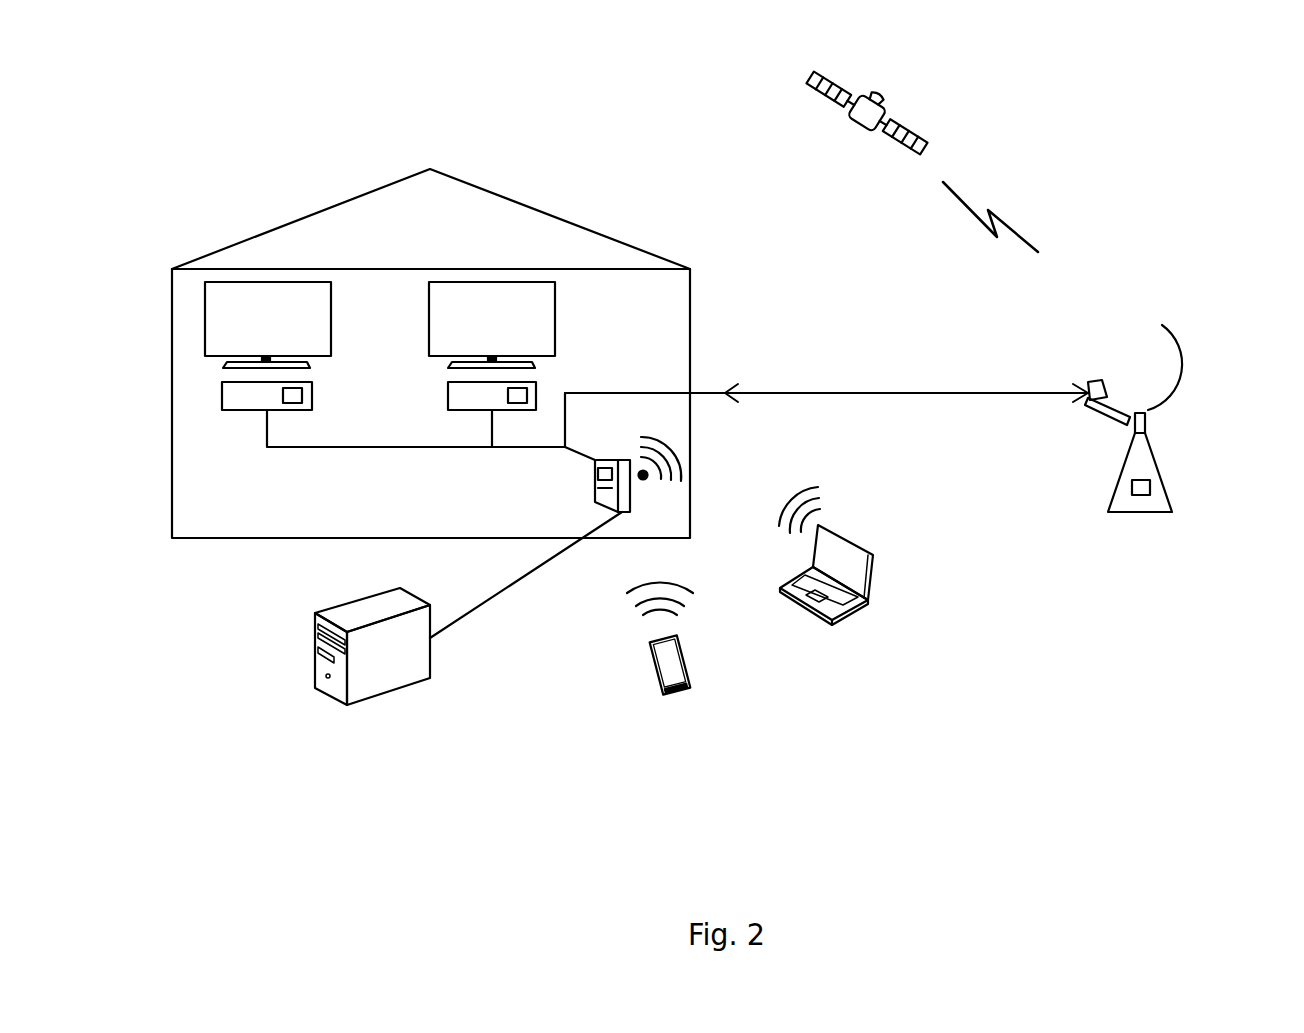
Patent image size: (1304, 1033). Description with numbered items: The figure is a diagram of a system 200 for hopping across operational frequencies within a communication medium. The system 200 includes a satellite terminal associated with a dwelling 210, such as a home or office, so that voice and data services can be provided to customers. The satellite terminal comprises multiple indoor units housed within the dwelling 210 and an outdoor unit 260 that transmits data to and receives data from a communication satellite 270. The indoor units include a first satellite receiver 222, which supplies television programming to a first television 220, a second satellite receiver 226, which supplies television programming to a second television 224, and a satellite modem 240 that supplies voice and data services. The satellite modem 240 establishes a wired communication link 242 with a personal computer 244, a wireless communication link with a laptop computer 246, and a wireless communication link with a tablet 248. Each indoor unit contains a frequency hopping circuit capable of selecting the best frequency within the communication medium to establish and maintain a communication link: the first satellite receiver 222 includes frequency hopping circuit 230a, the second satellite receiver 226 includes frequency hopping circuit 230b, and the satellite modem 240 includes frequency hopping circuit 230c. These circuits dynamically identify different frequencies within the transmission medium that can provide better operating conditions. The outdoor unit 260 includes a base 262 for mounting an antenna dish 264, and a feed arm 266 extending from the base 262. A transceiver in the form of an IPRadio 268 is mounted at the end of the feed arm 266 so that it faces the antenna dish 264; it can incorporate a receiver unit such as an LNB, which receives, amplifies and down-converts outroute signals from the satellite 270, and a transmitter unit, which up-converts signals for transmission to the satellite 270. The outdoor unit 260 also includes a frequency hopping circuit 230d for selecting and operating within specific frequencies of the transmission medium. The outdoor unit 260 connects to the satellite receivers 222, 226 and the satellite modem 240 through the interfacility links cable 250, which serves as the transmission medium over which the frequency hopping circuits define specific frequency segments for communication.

The system 200 is at (1243, 48).
The dwelling 210 is at (310, 215).
The first television 220 is at (331, 313).
The first satellite receiver 222 is at (233, 414).
The second television 224 is at (555, 318).
The second satellite receiver 226 is at (447, 391).
The frequency hopping circuit 230a is at (303, 400).
The frequency hopping circuit 230b is at (538, 391).
The frequency hopping circuit 230c is at (596, 488).
The frequency hopping circuit 230d is at (1140, 497).
The satellite modem 240 is at (625, 460).
The network connection cable 242 is at (477, 610).
The personal computer 244 is at (313, 667).
The laptop computer 246 is at (873, 580).
The tablet 248 is at (665, 697).
The interfacility links (IFL) cable 250 is at (817, 390).
The outdoor unit 260 is at (1108, 298).
The base 262 is at (1160, 472).
The antenna dish 264 is at (1182, 368).
The feed arm 266 is at (1108, 418).
The IPRadio 268 is at (1088, 384).
The communication satellite 270 is at (915, 133).